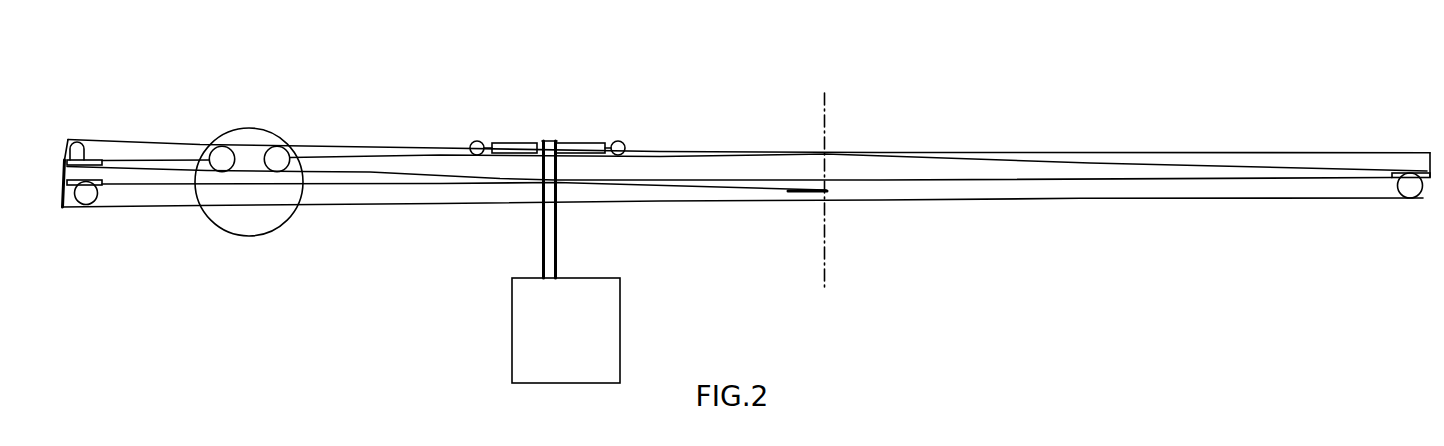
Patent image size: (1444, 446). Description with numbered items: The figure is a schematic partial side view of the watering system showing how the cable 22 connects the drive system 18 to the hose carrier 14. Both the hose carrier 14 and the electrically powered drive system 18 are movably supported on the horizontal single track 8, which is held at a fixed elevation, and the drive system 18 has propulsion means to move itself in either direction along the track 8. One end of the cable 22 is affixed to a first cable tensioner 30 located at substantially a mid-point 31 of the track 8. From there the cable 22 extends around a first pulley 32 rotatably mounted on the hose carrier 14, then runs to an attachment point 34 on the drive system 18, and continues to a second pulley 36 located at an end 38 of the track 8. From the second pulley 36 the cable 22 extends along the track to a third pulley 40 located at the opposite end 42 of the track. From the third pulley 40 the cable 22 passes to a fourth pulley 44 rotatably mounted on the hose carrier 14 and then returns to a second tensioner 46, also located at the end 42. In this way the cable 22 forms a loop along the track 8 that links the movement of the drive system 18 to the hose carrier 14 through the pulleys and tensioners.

The horizontal single track 8 is at (1268, 160).
The hose carrier 14 is at (258, 222).
The electrically powered drive system 18 is at (518, 143).
The cable 22 is at (140, 143).
The first cable tensioner 30 is at (810, 200).
The mid-point 31 is at (827, 171).
The first pulley 32 is at (278, 158).
The attachment point 34 is at (537, 148).
The second pulley 36 is at (1417, 195).
The end 38 is at (1433, 150).
The third pulley 40 is at (95, 198).
The end 42 is at (90, 160).
The fourth pulley 44 is at (223, 158).
The second tensioner 46 is at (65, 198).